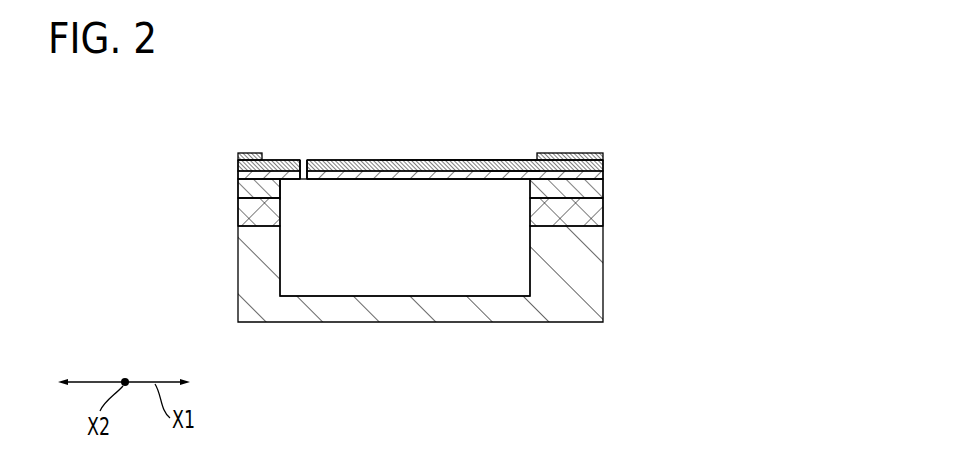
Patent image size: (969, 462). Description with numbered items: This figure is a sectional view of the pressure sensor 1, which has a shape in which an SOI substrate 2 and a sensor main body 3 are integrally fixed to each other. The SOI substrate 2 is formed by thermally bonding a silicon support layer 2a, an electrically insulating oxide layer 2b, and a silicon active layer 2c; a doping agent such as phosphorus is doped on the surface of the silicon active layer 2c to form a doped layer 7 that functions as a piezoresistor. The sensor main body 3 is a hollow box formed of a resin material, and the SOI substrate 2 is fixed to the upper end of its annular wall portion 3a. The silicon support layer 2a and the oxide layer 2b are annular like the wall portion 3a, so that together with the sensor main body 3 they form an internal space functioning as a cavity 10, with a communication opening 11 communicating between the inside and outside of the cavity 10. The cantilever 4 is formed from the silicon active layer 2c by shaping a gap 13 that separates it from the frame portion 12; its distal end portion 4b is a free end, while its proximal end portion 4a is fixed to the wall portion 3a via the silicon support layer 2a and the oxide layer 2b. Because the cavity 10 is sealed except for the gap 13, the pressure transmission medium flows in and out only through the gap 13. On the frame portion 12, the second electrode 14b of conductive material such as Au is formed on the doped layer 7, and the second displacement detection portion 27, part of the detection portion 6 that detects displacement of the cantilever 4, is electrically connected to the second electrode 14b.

The pressure sensor 1 is at (723, 119).
The SOI substrate 2 is at (665, 150).
The silicon support layer 2a is at (598, 212).
The oxide layer 2b is at (598, 186).
The silicon active layer 2c is at (598, 170).
The sensor main body 3 is at (608, 301).
The wall portion 3a is at (598, 262).
The cantilever 4 is at (366, 155).
The proximal end portion 4a is at (474, 164).
The distal end portion 4b is at (306, 180).
The detection portion 6 is at (521, 123).
The doped layer 7 is at (421, 162).
The cavity 10 is at (420, 276).
The communication opening 11 is at (285, 185).
The frame portion 12 is at (276, 155).
The gap 13 is at (304, 176).
The second electrode 14b is at (585, 153).
The second displacement detection portion 27 is at (512, 162).